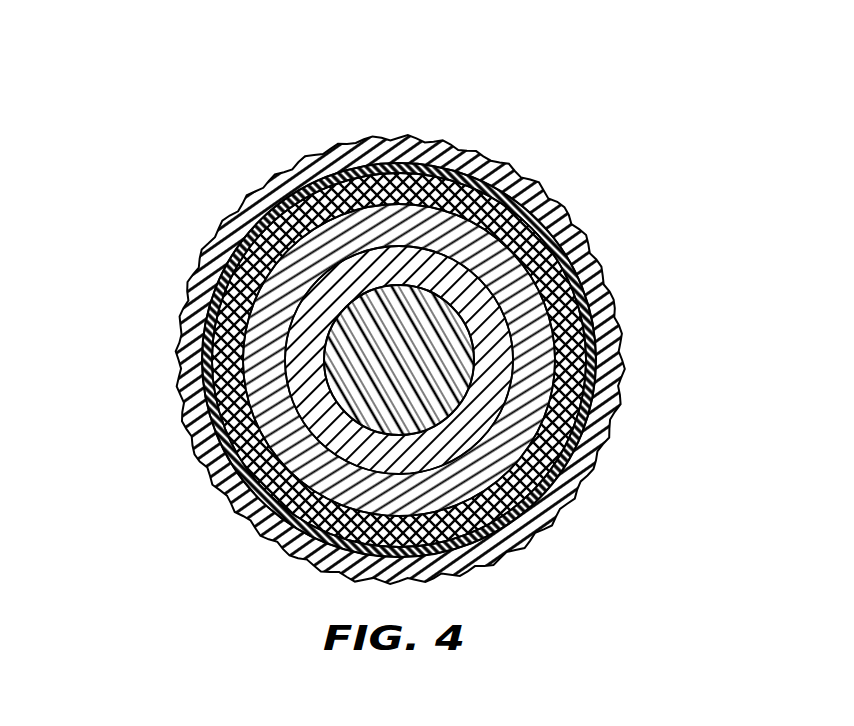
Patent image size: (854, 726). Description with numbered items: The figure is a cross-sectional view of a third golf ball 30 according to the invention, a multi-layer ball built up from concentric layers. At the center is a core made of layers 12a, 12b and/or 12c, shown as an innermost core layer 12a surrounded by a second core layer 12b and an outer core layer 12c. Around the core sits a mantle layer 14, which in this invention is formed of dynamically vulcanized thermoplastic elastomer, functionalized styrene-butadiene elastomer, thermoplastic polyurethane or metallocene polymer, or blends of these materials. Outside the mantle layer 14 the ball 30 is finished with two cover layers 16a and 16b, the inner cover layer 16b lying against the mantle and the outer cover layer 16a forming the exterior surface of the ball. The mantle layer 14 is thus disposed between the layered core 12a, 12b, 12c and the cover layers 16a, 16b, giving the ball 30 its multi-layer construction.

The golf ball 30 is at (406, 311).
The core layer 12a is at (450, 380).
The core layer 12b is at (327, 400).
The core layer 12c is at (200, 258).
The mantle layer 14 is at (238, 210).
The cover layer 16a is at (335, 150).
The cover layer 16b is at (403, 160).